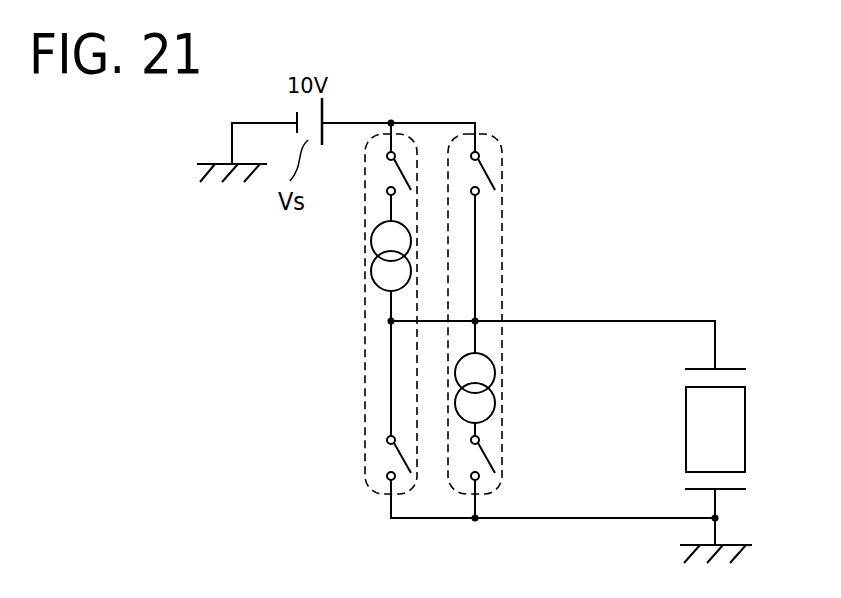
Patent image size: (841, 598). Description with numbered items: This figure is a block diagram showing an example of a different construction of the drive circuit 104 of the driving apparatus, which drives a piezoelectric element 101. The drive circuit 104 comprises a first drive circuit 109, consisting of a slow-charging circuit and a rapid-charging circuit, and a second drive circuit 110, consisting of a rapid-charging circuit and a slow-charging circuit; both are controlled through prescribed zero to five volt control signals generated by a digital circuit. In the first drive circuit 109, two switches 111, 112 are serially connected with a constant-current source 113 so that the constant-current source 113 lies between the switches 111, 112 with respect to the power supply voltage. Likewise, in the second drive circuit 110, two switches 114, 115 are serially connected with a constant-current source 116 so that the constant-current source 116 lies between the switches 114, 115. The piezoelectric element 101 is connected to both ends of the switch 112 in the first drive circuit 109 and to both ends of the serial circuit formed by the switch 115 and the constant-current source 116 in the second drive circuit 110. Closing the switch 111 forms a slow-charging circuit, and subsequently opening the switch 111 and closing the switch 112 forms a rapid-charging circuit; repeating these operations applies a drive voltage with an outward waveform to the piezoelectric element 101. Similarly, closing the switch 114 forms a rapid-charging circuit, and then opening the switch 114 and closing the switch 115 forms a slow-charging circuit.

The piezoelectric element 101 is at (728, 432).
The drive circuit 104 is at (566, 176).
The first drive circuit 109 is at (365, 385).
The second drive circuit 110 is at (502, 281).
The switch 111 is at (385, 180).
The switch 112 is at (390, 460).
The constant-current source 113 is at (372, 270).
The switch 114 is at (483, 187).
The switch 115 is at (486, 478).
The constant-current source 116 is at (487, 373).